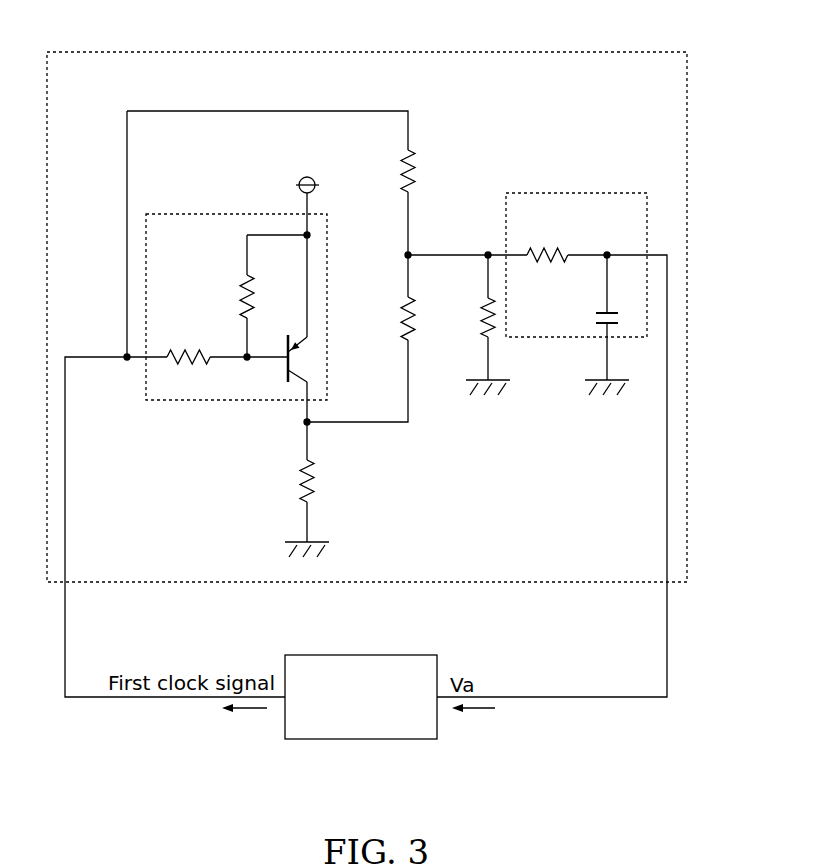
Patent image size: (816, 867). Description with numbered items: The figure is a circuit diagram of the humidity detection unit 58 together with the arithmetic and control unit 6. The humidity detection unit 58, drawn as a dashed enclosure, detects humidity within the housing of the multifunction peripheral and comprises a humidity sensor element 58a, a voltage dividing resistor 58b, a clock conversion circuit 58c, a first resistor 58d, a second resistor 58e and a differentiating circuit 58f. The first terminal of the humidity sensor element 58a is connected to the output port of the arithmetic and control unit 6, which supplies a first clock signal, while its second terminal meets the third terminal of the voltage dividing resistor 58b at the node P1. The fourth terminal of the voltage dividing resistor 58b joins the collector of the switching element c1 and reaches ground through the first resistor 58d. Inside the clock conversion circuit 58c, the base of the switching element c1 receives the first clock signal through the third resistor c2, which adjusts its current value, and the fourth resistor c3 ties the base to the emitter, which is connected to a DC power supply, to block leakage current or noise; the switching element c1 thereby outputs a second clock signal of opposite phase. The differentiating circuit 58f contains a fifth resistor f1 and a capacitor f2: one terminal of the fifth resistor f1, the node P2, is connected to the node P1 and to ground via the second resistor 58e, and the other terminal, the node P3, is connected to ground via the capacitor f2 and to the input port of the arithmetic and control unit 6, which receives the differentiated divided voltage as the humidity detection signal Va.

The humidity detection unit 58 is at (540, 52).
The humidity sensor element 58a is at (413, 178).
The voltage dividing resistor 58b is at (413, 318).
The clock conversion circuit 58c is at (216, 213).
The first resistor 58d is at (313, 478).
The second resistor 58e is at (483, 333).
The differentiating circuit 58f is at (580, 193).
The switching element c1 is at (290, 342).
The third resistor c2 is at (188, 350).
The fourth resistor c3 is at (247, 293).
The fifth resistor f1 is at (556, 252).
The capacitor f2 is at (610, 312).
The node P1 is at (410, 252).
The node P2 is at (488, 248).
The node P3 is at (608, 252).
The arithmetic and control unit 6 is at (345, 654).